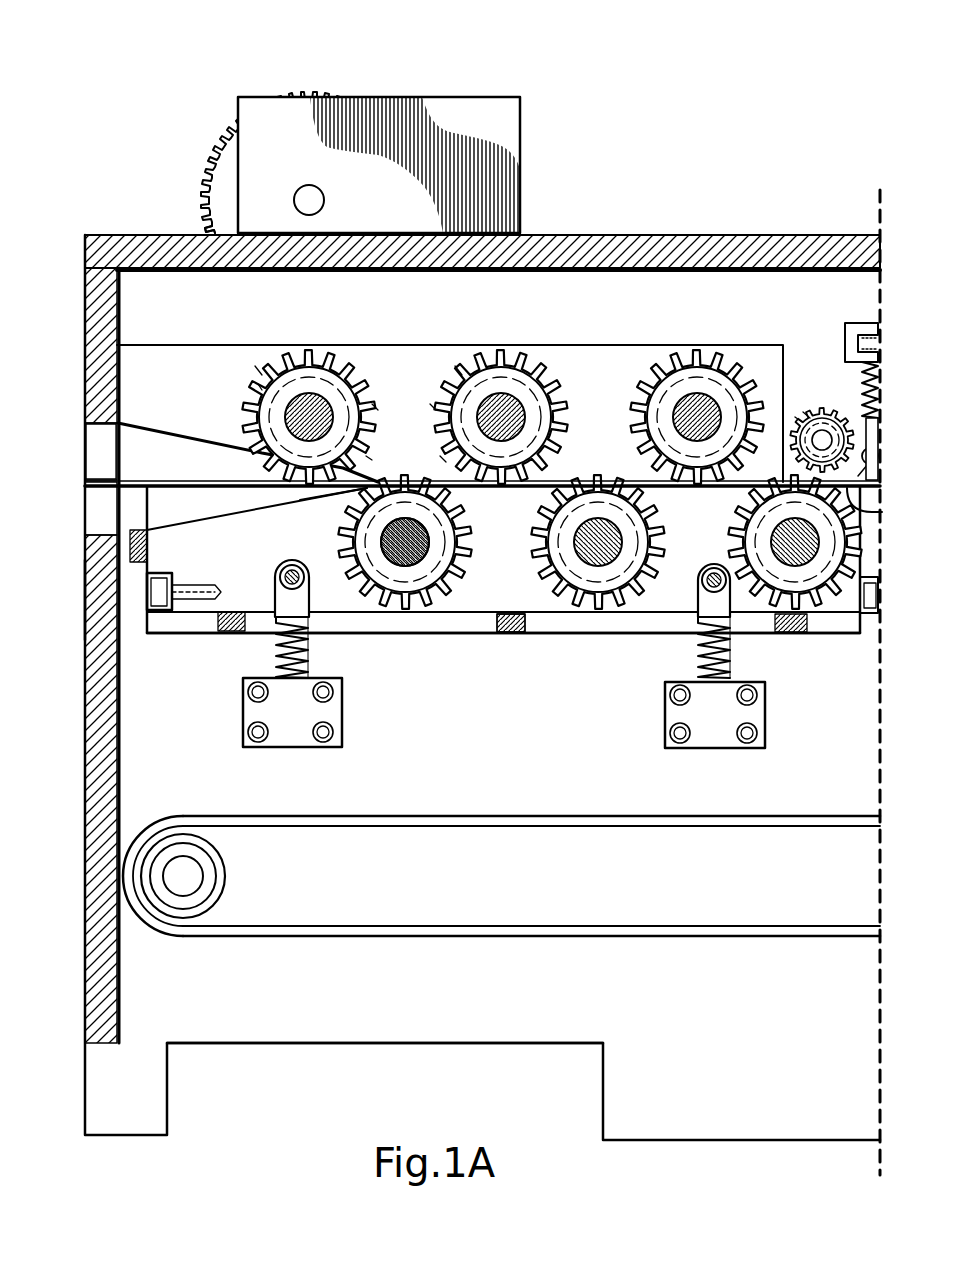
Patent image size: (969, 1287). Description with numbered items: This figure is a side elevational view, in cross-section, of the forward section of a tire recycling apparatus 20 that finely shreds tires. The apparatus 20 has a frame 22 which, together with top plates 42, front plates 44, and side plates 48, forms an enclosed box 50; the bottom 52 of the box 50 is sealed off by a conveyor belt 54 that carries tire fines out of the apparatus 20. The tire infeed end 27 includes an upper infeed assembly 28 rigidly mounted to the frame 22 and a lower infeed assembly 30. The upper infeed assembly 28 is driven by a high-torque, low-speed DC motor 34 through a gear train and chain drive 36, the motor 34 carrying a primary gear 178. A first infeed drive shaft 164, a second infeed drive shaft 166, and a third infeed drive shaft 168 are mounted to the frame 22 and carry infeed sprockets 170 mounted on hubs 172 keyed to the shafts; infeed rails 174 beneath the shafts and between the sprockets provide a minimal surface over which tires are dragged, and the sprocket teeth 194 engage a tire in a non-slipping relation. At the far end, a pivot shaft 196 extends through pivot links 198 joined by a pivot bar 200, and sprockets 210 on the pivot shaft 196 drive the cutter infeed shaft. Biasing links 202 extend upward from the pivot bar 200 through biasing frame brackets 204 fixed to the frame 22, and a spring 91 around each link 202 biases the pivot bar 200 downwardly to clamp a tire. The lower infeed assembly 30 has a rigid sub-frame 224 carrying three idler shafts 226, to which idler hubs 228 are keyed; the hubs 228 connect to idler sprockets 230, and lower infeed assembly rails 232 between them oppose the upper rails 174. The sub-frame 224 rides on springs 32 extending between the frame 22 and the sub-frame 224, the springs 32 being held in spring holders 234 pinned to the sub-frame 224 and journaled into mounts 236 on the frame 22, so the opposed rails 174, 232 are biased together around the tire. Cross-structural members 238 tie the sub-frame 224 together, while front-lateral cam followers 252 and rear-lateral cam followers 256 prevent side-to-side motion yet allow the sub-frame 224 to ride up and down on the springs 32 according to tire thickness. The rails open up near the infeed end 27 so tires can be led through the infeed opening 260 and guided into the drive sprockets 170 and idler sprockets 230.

The tire recycling apparatus 20 is at (646, 140).
The frame 22 is at (725, 235).
The tire infeed end 27 is at (85, 595).
The upper infeed assembly 28 is at (582, 345).
The lower infeed assembly 30 is at (455, 633).
The springs 32 is at (312, 664).
The DC motor 34 is at (400, 100).
The gear train and chain drive 36 is at (200, 183).
The top plates 42 is at (582, 235).
The front plates 44 is at (85, 725).
The side plates 48 is at (503, 684).
The enclosed box 50 is at (121, 722).
The bottom 52 is at (283, 1043).
The conveyor belt 54 is at (498, 912).
The spring 91 is at (864, 386).
The first infeed drive shaft 164 is at (318, 396).
The second infeed drive shaft 166 is at (500, 395).
The third infeed drive shaft 168 is at (697, 396).
The infeed sprockets 170 is at (436, 405).
The hubs 172 is at (262, 368).
The infeed rails 174 is at (190, 440).
The primary gear 178 is at (237, 125).
The sprocket teeth 194 is at (258, 385).
The pivot shaft 196 is at (800, 420).
The pivot links 198 is at (876, 530).
The pivot bar 200 is at (862, 494).
The biasing links 202 is at (858, 420).
The biasing frame brackets 204 is at (856, 323).
The sprockets 210 is at (806, 415).
The sub-frame 224 is at (193, 613).
The idler shafts 226 is at (578, 545).
The idler hubs 228 is at (430, 548).
The idler sprockets 230 is at (345, 522).
The lower infeed assembly rails 232 is at (236, 514).
The spring holders 234 is at (278, 590).
The mounts 236 is at (504, 713).
The cross-structural members 238 is at (533, 633).
The front-lateral cam followers 252 is at (150, 631).
The rear-lateral cam followers 256 is at (858, 633).
The infeed opening 260 is at (85, 453).